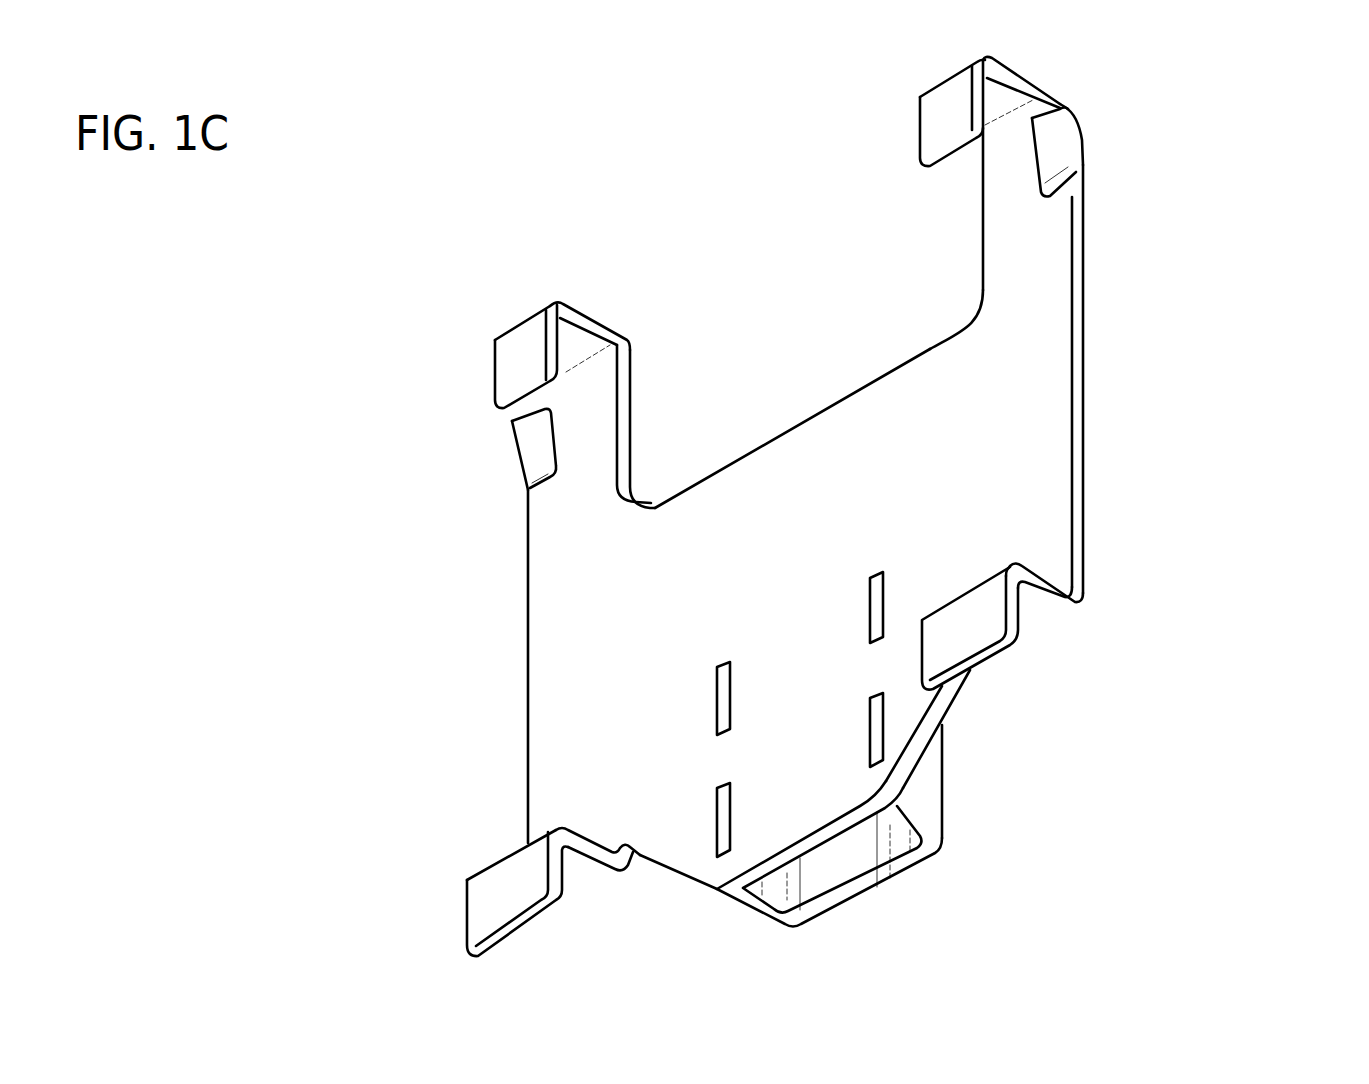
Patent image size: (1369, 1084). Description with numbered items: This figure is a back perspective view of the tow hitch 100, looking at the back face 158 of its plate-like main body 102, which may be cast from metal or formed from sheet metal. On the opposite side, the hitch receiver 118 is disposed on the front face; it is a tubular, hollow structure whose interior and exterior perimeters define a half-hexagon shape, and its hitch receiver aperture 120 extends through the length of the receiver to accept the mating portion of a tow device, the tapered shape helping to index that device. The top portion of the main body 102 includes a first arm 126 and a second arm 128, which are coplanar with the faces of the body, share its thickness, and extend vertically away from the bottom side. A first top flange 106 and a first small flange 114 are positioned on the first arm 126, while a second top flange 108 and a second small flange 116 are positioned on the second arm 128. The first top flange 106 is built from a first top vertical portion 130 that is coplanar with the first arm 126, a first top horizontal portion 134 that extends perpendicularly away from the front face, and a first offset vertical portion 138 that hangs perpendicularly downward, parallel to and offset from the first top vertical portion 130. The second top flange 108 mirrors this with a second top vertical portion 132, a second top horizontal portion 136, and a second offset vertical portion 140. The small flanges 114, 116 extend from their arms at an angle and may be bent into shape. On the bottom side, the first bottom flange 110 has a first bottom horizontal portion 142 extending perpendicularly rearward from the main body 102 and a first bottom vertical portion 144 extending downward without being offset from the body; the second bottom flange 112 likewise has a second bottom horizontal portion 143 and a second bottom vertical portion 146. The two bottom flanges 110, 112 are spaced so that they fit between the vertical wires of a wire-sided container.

The tow hitch 100 is at (1273, 200).
The main body 102 is at (527, 670).
The first top flange 106 is at (565, 383).
The second top flange 108 is at (993, 318).
The first bottom flange 110 is at (503, 882).
The second bottom flange 112 is at (1028, 623).
The first small flange 114 is at (530, 450).
The second small flange 116 is at (1060, 157).
The hitch receiver 118 is at (930, 770).
The hitch receiver aperture 120 is at (853, 880).
The first arm 126 is at (573, 535).
The second arm 128 is at (1040, 245).
The first top vertical portion 130 is at (593, 407).
The second top vertical portion 132 is at (998, 202).
The first top horizontal portion 134 is at (583, 322).
The second top horizontal portion 136 is at (1028, 80).
The first offset vertical portion 138 is at (513, 357).
The second offset vertical portion 140 is at (928, 130).
The first bottom horizontal portion 142 is at (592, 850).
The second bottom horizontal portion 143 is at (1050, 585).
The first bottom vertical portion 144 is at (507, 877).
The second bottom vertical portion 146 is at (1007, 612).
The back face 158 is at (1043, 440).